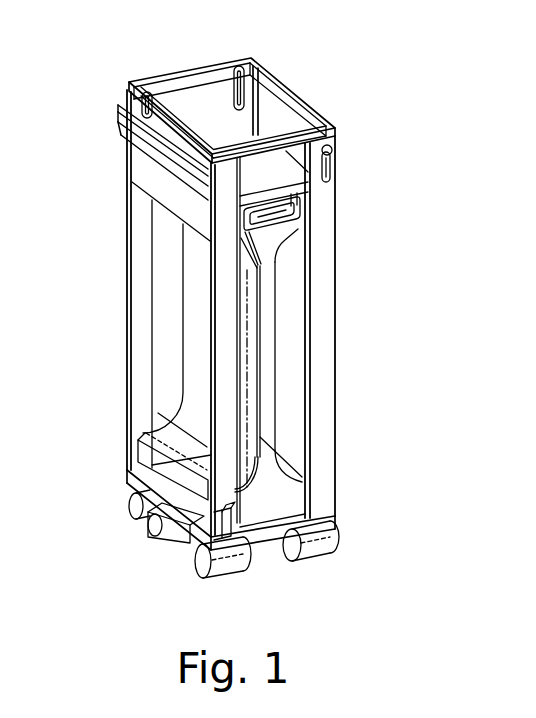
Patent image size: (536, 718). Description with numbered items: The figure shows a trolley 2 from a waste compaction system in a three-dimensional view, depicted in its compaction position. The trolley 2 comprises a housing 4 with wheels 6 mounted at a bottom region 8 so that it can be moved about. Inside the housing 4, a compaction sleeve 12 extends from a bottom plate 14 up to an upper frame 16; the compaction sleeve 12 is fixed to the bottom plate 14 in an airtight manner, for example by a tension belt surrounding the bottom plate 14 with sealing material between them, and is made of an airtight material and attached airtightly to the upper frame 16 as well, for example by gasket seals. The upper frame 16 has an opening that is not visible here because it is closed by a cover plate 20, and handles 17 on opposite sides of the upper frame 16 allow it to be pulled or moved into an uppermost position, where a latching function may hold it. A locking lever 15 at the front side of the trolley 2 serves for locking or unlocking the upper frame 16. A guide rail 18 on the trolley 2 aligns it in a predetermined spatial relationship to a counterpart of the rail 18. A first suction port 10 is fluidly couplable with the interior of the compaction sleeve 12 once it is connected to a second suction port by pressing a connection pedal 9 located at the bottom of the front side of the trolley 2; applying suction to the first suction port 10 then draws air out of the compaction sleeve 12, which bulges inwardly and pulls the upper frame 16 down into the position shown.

The trolley 2 is at (242, 322).
The housing 4 is at (323, 408).
The wheels 6 is at (327, 548).
The bottom region 8 is at (231, 532).
The connection pedal 9 is at (227, 512).
The first suction port 10 is at (175, 537).
The compaction sleeve 12 is at (275, 367).
The bottom plate 14 is at (253, 523).
The locking lever 15 is at (334, 152).
The upper frame 16 is at (273, 135).
The handles 17 is at (282, 221).
The guide rail 18 is at (122, 119).
The cover plate 20 is at (246, 110).